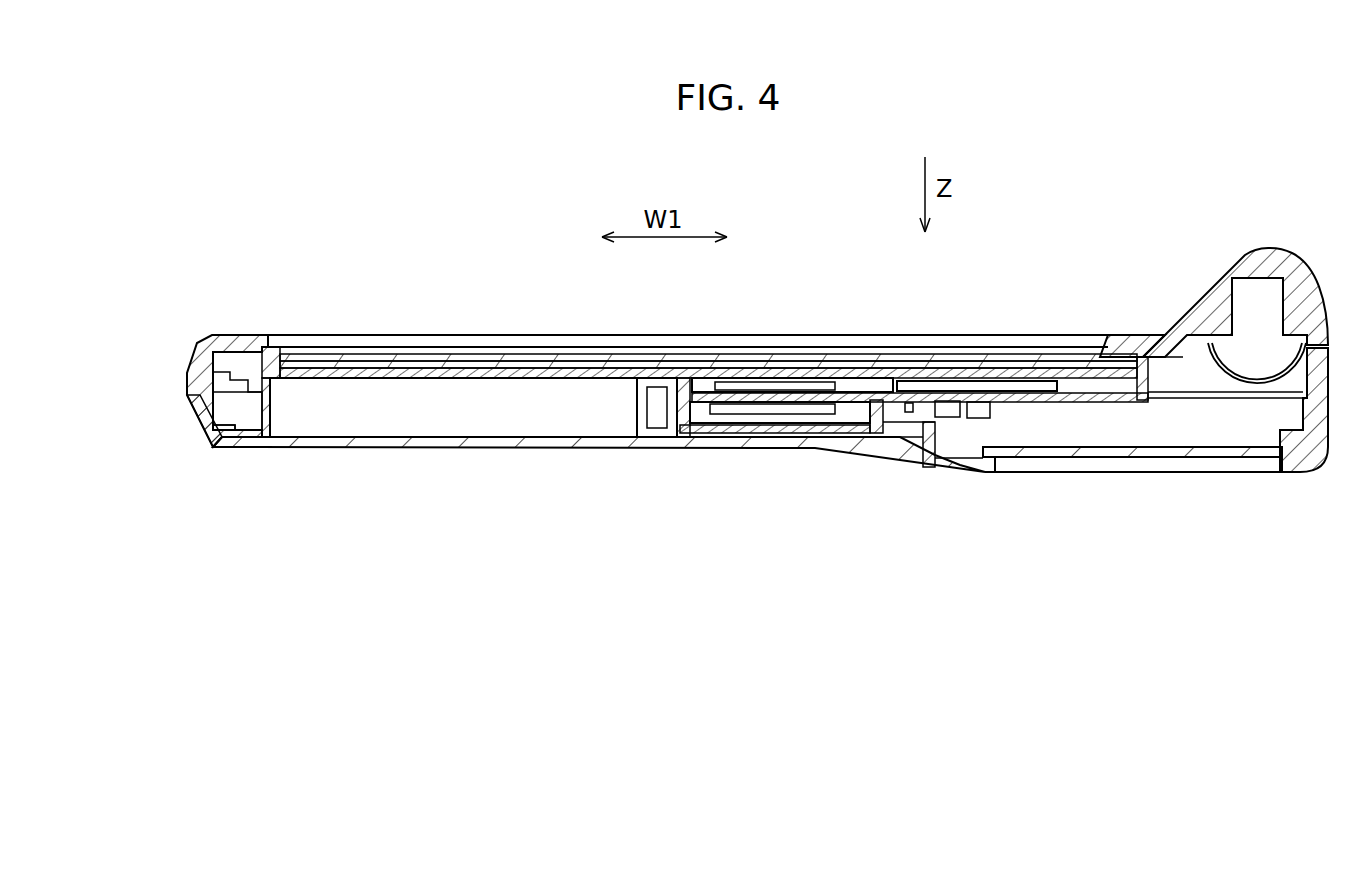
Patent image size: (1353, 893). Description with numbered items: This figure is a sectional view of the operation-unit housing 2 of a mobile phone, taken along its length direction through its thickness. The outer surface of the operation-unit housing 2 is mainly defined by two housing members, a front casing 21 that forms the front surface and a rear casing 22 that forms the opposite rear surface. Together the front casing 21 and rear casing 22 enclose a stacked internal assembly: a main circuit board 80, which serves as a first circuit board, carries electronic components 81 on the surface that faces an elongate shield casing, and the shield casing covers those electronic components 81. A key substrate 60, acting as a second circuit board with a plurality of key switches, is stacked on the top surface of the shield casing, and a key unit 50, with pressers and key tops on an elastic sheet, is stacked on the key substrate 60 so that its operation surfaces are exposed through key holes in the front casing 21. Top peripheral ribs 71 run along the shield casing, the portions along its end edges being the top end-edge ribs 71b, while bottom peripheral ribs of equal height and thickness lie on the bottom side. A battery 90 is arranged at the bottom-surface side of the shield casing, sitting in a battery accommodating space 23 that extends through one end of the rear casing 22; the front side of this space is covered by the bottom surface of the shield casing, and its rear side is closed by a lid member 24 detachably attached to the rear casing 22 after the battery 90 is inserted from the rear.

The operation-unit housing 2 is at (247, 230).
The front casing 21 is at (1137, 343).
The rear casing 22 is at (945, 463).
The battery accommodating space 23 is at (284, 365).
The lid member 24 is at (557, 443).
The key unit 50 is at (1033, 358).
The key substrate 60 is at (948, 367).
The top peripheral ribs 71 is at (760, 356).
The top end-edge ribs 71b is at (1160, 355).
The main circuit board 80 is at (1095, 400).
The electronic components 81 is at (1027, 390).
The battery 90 is at (430, 417).